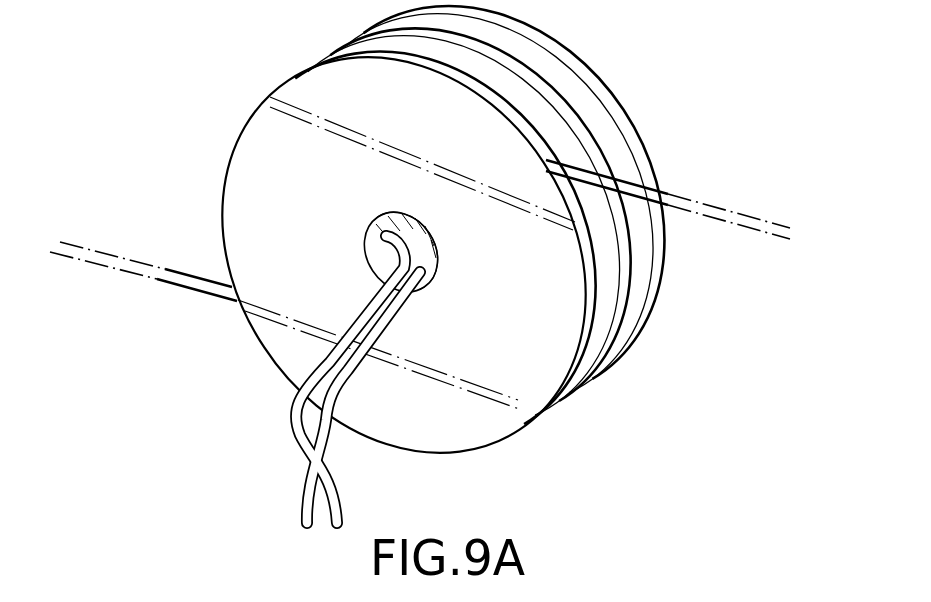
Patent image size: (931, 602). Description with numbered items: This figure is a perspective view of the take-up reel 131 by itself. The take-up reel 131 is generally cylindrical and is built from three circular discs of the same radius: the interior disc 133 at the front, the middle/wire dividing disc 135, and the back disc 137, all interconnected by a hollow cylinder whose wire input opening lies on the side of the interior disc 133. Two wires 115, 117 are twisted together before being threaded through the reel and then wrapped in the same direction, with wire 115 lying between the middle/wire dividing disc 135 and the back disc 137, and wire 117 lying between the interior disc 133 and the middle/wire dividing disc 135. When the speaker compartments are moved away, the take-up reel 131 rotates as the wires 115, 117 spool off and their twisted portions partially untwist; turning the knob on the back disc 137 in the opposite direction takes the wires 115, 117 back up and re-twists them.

The take-up reel 131 is at (632, 105).
The interior disc 133 is at (545, 380).
The middle/wire dividing disc 135 is at (618, 290).
The back disc 137 is at (643, 152).
The wire 115 is at (673, 197).
The wire 117 is at (184, 270).